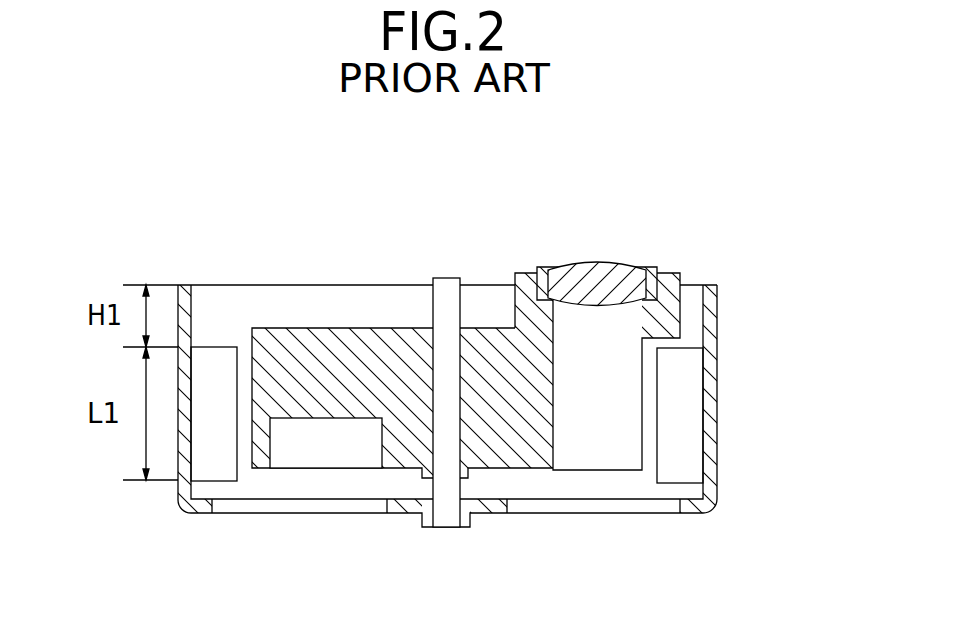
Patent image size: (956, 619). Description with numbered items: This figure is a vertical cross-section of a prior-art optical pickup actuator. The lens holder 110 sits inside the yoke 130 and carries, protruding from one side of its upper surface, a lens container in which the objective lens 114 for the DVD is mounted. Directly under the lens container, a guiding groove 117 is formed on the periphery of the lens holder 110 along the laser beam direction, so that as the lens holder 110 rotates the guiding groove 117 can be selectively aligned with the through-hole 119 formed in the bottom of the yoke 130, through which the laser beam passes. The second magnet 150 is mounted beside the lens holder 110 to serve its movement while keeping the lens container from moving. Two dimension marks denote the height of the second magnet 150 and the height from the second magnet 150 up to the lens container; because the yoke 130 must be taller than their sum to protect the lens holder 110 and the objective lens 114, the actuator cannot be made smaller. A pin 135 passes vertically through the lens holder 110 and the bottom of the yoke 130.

The lens holder 110 is at (303, 345).
The objective lens 114 is at (597, 267).
The guiding groove 117 is at (605, 417).
The through-hole 119 is at (607, 508).
The yoke 130 is at (710, 435).
The terminal pin 135 is at (445, 285).
The second magnet pair 150 is at (680, 377).